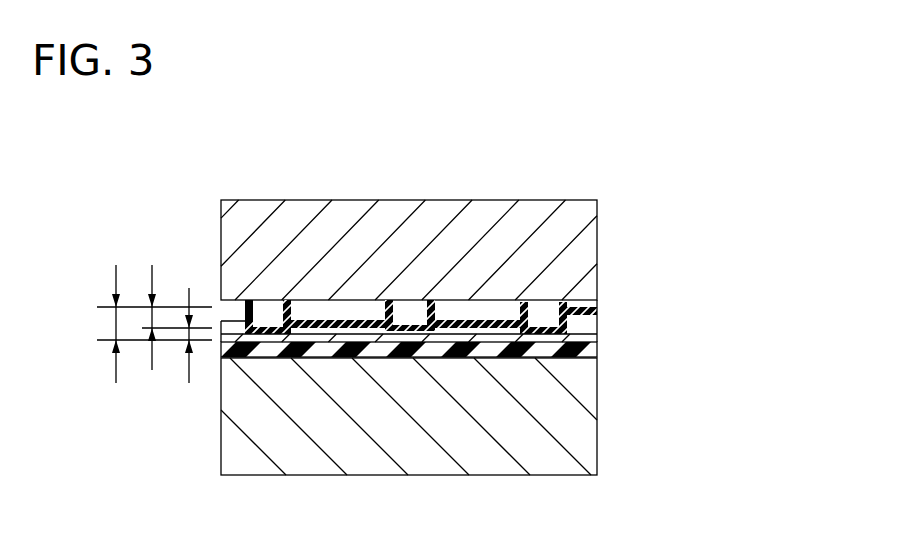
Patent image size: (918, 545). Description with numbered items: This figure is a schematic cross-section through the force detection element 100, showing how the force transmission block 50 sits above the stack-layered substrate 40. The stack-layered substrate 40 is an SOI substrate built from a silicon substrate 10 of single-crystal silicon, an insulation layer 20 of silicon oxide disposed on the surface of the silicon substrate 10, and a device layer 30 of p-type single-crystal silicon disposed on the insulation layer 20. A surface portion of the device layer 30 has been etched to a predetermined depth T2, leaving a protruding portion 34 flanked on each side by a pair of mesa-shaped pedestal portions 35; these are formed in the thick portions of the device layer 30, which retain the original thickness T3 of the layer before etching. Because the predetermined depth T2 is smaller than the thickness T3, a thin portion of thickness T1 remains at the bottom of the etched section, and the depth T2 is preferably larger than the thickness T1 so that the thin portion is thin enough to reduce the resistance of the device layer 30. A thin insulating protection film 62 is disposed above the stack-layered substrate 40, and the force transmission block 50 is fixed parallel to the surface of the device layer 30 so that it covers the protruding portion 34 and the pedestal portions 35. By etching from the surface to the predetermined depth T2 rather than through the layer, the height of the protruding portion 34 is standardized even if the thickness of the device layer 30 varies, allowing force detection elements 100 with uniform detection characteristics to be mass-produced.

The force detection element 100 is at (640, 124).
The force transmission block 50 is at (596, 240).
The insulating protection film 62 is at (598, 316).
The pedestal portions 35 is at (257, 305).
The protruding portion 34 is at (444, 305).
The stack-layered substrate 40 is at (485, 387).
The device layer 30 is at (597, 335).
The insulation layer 20 is at (597, 352).
The silicon substrate 10 is at (462, 416).
The thickness of thin portion T1 is at (189, 339).
The predetermined depth T2 is at (151, 322).
The thickness of device layer T3 is at (140, 324).